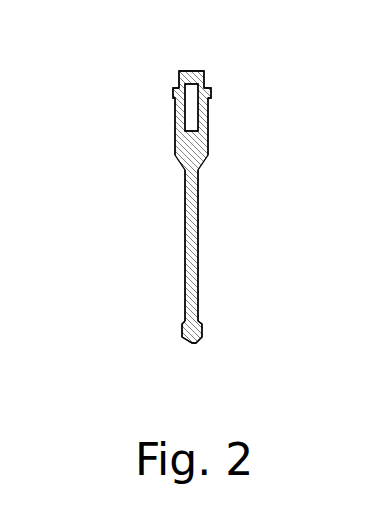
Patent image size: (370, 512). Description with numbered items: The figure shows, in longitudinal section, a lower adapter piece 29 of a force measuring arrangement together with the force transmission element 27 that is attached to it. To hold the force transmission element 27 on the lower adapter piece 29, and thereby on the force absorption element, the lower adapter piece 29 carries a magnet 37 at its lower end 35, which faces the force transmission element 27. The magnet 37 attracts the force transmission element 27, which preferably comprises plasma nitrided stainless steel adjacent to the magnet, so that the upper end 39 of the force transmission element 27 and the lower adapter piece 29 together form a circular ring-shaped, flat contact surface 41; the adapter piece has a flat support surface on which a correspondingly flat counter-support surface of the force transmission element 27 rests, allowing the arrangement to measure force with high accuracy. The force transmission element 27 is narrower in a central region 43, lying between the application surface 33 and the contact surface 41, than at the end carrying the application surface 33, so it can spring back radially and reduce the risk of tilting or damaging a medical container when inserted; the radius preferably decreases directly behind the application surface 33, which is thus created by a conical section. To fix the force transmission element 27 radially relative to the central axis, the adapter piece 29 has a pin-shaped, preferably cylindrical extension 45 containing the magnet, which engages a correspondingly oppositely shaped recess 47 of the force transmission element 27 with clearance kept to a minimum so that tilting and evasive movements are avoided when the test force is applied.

The force transmission element 27 is at (185, 213).
The lower adapter piece 29 is at (204, 84).
The application surface 33 is at (191, 343).
The lower end 35 is at (210, 118).
The magnet 37 is at (176, 128).
The upper end 39 is at (176, 99).
The circular ring-shaped flat contact surface 41 is at (210, 92).
The central region 43 is at (198, 255).
The pin-shaped extension 45 is at (178, 106).
The recess 47 is at (113, 113).